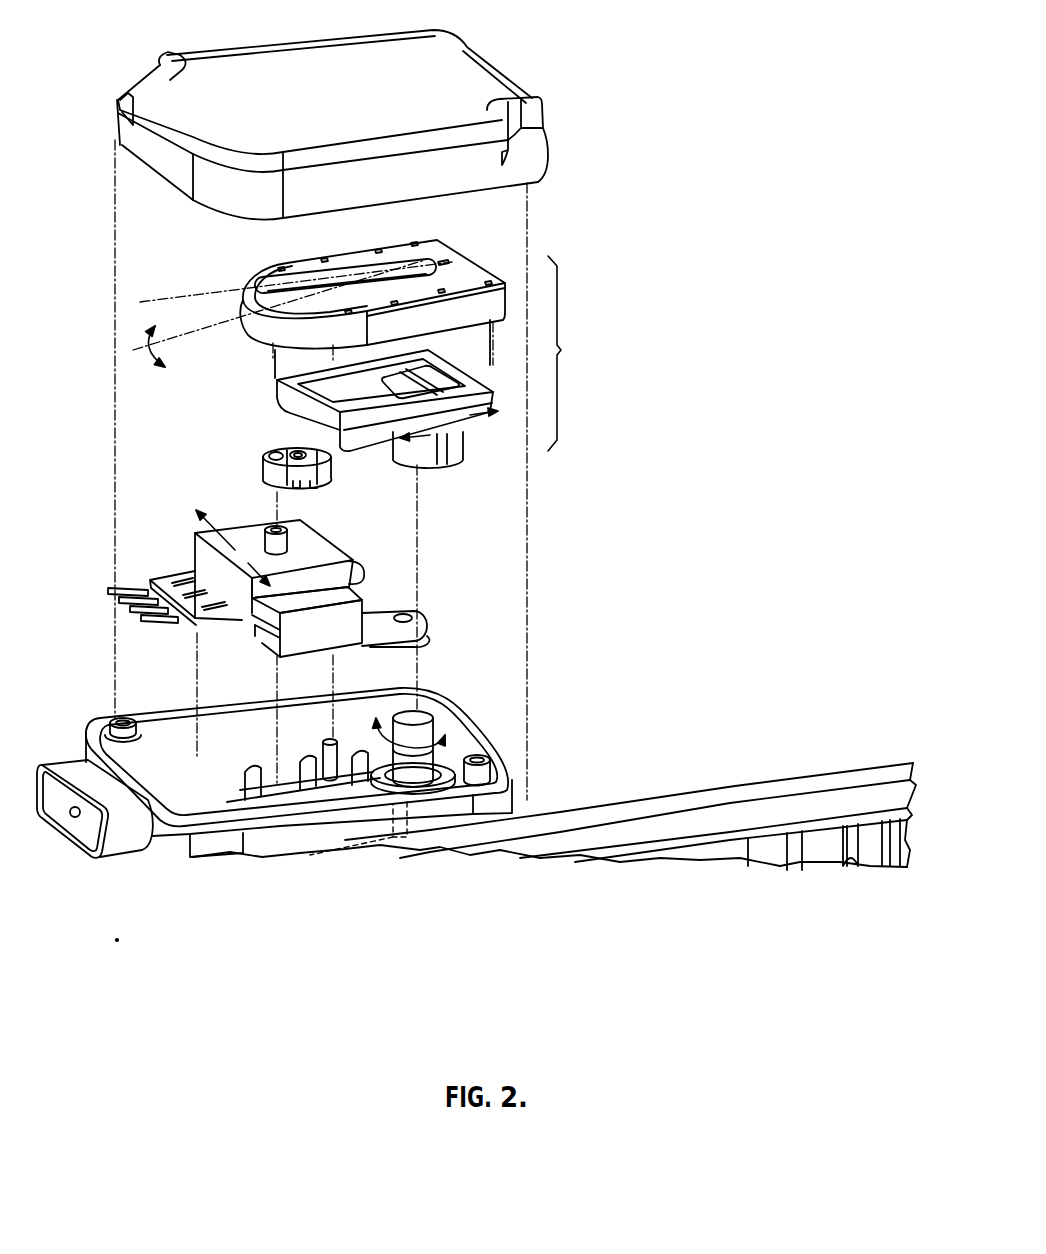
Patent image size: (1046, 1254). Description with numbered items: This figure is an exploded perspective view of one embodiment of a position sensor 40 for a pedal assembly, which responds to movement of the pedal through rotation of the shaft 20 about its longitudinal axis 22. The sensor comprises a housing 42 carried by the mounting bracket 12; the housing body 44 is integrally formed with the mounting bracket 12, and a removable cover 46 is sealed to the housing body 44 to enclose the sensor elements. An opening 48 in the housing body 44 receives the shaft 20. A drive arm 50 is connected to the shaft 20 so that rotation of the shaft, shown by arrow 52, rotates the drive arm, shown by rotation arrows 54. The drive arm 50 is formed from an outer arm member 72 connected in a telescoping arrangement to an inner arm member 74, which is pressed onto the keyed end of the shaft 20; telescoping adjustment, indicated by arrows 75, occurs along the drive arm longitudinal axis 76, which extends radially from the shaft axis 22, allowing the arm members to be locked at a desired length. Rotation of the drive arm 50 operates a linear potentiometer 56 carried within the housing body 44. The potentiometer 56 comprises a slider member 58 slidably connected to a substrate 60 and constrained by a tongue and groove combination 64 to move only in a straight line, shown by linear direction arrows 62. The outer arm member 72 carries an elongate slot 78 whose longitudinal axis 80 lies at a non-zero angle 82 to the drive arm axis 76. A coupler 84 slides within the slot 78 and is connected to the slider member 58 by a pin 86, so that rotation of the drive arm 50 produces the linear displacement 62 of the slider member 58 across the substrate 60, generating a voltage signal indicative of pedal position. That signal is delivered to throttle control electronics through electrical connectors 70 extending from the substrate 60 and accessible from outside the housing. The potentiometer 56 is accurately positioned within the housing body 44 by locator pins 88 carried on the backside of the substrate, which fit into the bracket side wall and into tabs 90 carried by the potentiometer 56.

The mounting bracket 12 is at (617, 807).
The shaft 20 is at (425, 712).
The longitudinal axis 22 is at (421, 692).
The position sensor 40 is at (587, 147).
The housing 42 is at (487, 730).
The housing body 44 is at (500, 790).
The cover 46 is at (502, 87).
The opening 48 is at (452, 785).
The drive arm 50 is at (565, 351).
The rotation arrow 52 is at (372, 713).
The rotation arrows 54 is at (150, 360).
The linear potentiometer 56 is at (365, 543).
The slider member 58 is at (308, 540).
The substrate 60 is at (425, 646).
The linear direction arrows 62 is at (233, 543).
The tongue and groove combination 64 is at (257, 627).
The electrical connectors 70 is at (147, 628).
The outer arm member 72 is at (470, 250).
The inner arm member 74 is at (280, 409).
The telescoping adjustment arrows 75 is at (463, 434).
The drive arm longitudinal axis 76 is at (250, 338).
The slot 78 is at (352, 272).
The slot longitudinal axis 80 is at (152, 300).
The non-zero angle 82 is at (197, 315).
The coupler 84 is at (328, 468).
The pin 86 is at (292, 518).
The locator pins 88 is at (327, 740).
The tabs 90 is at (432, 622).